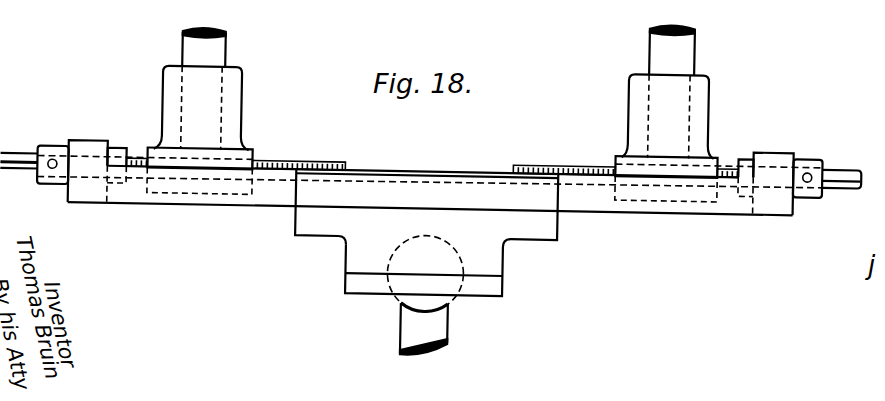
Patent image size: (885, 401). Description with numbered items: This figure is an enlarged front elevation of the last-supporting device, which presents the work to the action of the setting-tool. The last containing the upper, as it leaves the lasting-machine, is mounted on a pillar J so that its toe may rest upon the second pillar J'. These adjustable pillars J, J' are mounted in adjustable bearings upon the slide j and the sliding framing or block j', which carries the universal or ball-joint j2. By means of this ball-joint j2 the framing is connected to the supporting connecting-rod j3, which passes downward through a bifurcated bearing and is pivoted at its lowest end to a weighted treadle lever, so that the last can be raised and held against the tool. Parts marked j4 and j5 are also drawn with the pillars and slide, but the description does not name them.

The slide j is at (430, 195).
The block j' is at (433, 221).
The ball-joint j2 is at (408, 298).
The connecting-rod j3 is at (448, 327).
The jaw body j4 is at (240, 100).
The rack and shaft j5 is at (27, 137).
The pillar J is at (672, 50).
The pillar J' is at (228, 43).